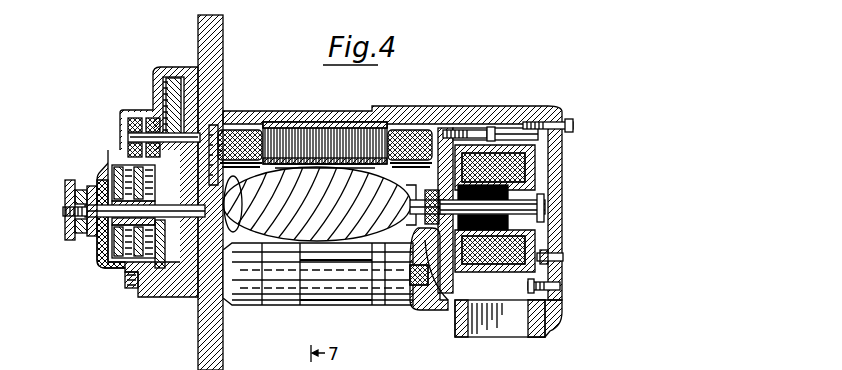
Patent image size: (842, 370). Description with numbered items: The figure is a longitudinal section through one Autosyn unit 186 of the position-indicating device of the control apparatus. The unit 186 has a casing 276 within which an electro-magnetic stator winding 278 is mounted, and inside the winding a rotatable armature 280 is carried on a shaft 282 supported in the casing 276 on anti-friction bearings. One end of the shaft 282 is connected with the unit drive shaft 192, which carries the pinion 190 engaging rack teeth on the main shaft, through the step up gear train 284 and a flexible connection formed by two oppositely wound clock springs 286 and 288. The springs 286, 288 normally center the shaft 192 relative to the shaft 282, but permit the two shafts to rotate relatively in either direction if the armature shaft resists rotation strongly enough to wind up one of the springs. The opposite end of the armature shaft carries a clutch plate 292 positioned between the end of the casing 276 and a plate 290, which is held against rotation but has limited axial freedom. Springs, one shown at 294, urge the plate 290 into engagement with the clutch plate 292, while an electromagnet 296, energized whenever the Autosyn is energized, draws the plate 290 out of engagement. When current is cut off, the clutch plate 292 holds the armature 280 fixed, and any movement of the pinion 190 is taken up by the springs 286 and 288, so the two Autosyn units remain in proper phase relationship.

The Autosyn unit 186 is at (320, 115).
The pinion 190 is at (68, 240).
The unit drive shaft 192 is at (103, 180).
The casing 276 is at (412, 108).
The electro-magnetic stator winding 278 is at (285, 122).
The armature 280 is at (333, 250).
The shaft 282 is at (172, 297).
The step up gear train 284 is at (157, 108).
The clock spring 286 is at (100, 268).
The clock spring 288 is at (125, 274).
The plate 290 is at (445, 128).
The clutch plate 292 is at (452, 300).
The spring 294 is at (458, 318).
The electromagnet 296 is at (535, 172).